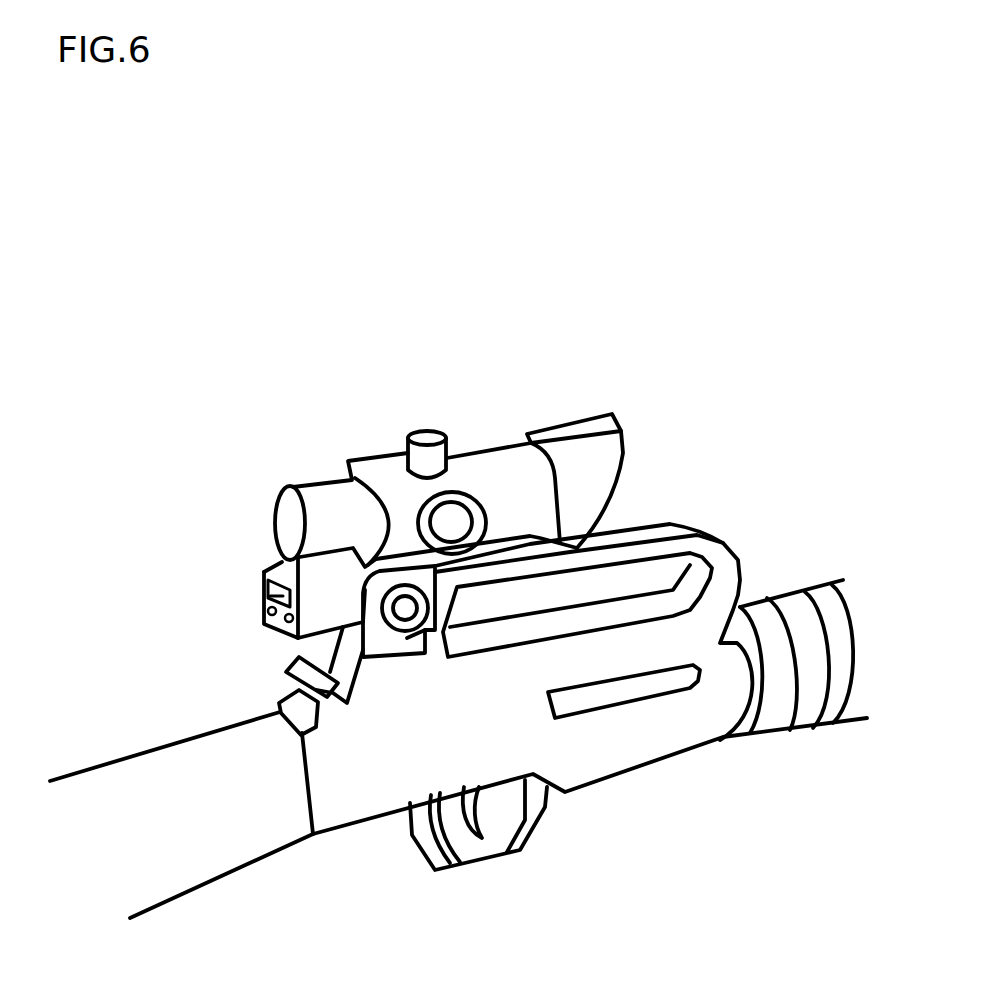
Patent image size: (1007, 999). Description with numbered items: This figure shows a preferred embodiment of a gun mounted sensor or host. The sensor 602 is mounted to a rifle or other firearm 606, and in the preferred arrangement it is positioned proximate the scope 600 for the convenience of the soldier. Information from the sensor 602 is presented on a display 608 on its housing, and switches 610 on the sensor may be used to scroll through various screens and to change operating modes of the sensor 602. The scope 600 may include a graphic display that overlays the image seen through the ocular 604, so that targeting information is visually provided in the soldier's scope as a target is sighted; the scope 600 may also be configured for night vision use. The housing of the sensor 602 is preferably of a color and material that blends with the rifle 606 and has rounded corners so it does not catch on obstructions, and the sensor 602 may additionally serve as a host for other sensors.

The scope 600 is at (324, 478).
The sensor 602 is at (195, 578).
The ocular 604 is at (287, 520).
The rifle 606 is at (742, 563).
The display 608 is at (267, 592).
The switches 610 is at (267, 610).